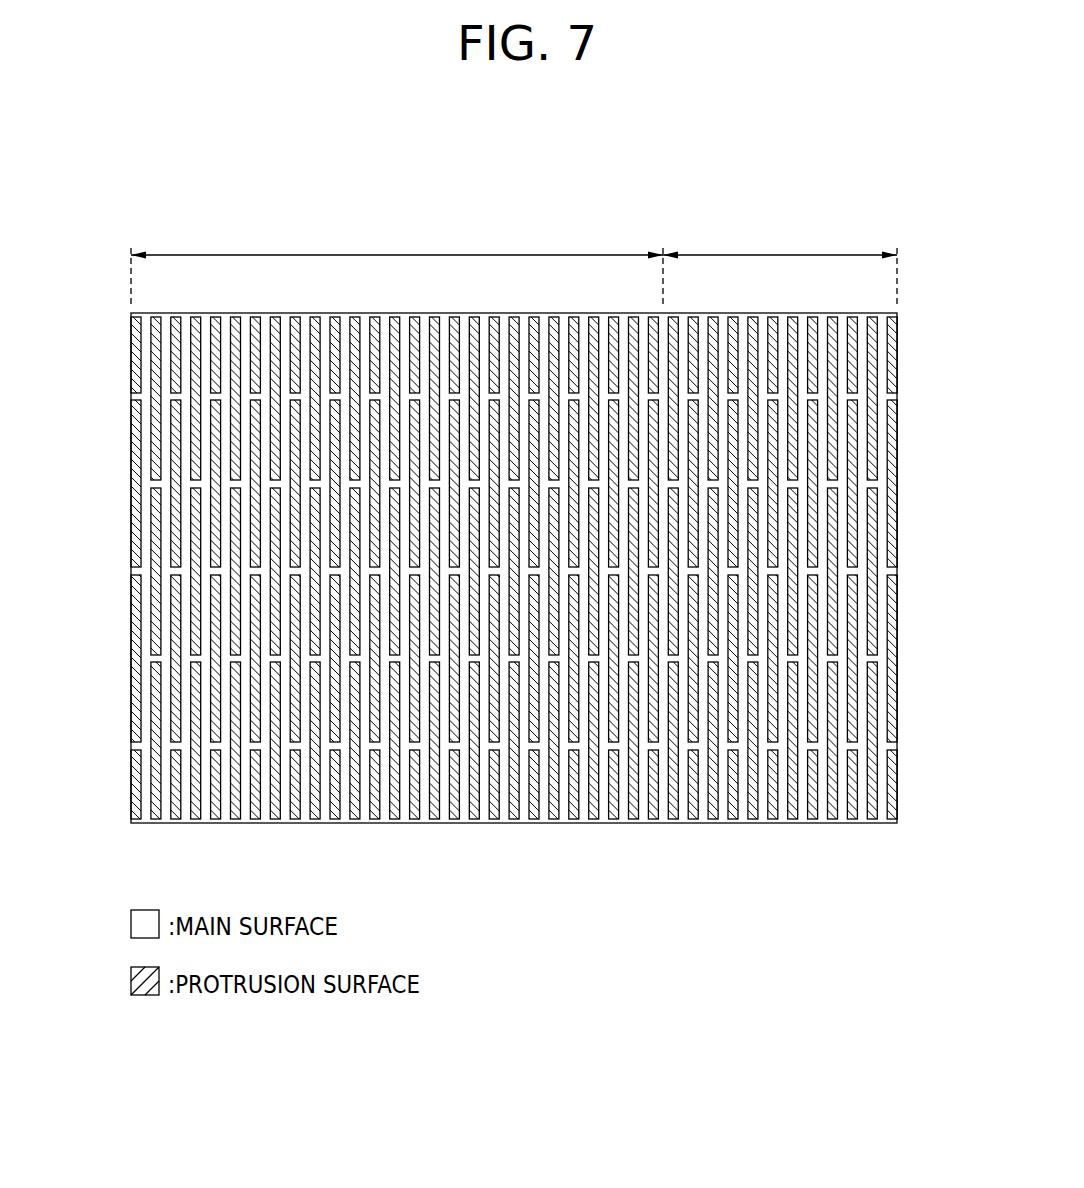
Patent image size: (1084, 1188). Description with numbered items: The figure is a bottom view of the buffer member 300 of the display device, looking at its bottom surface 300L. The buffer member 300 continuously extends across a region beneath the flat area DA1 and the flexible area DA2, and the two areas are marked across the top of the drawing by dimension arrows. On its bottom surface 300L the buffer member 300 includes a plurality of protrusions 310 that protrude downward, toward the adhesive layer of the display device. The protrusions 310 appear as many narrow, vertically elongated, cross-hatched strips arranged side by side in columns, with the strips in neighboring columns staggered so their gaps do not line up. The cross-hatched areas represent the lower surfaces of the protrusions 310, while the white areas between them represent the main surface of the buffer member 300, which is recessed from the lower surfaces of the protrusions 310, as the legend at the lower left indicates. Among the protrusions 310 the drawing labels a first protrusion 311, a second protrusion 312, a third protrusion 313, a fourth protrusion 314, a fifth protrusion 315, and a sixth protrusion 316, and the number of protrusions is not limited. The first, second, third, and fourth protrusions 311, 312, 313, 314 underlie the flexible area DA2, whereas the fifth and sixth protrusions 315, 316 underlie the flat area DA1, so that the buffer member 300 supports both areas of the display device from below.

The buffer member 300 is at (131, 392).
The bottom surface of the buffer member 300L is at (919, 226).
The protrusions 310 is at (514, 667).
The first protrusion 311 is at (653, 819).
The second protrusion 312 is at (673, 819).
The third protrusion 313 is at (693, 819).
The fourth protrusion 314 is at (713, 819).
The fifth protrusion 315 is at (613, 819).
The sixth protrusion 316 is at (633, 819).
The flat area DA1 is at (397, 267).
The flexible area DA2 is at (780, 267).